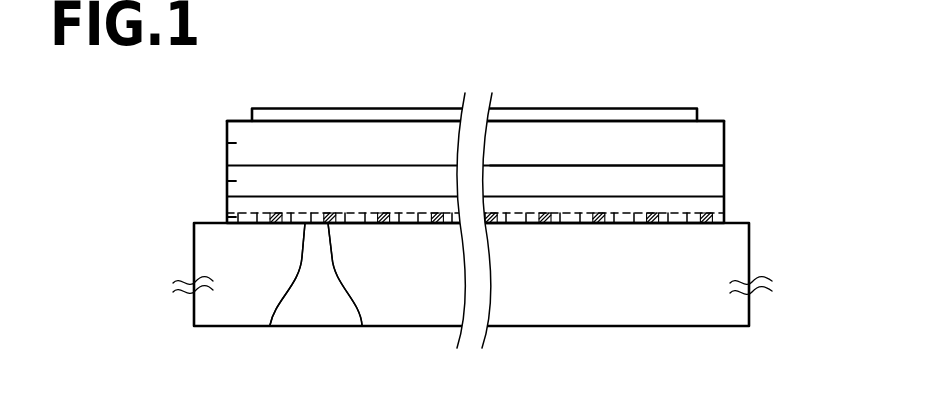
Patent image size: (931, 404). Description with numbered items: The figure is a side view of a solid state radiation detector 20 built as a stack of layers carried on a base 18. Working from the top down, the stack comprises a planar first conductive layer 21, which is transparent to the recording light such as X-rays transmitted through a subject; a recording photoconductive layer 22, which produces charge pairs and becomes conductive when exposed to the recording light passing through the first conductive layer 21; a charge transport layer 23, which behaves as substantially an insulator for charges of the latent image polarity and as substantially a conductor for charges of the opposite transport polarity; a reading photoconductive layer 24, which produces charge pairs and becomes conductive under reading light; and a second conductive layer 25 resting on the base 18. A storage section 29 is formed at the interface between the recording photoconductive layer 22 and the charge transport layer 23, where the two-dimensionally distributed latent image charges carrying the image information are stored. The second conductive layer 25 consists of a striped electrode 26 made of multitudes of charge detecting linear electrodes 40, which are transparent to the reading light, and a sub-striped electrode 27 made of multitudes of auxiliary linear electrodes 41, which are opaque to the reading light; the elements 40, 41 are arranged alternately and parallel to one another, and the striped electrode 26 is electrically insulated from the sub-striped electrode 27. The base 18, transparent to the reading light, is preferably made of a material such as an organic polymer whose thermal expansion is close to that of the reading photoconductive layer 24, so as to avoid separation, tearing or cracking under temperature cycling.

The base 18 is at (203, 317).
The solid state radiation detector 20 is at (634, 87).
The first conductive layer 21 is at (252, 118).
The recording photoconductive layer 22 is at (228, 121).
The charge transport layer 23 is at (227, 143).
The reading photoconductive layer 24 is at (227, 181).
The second conductive layer 25 is at (227, 217).
The striped electrode 26 is at (287, 274).
The sub-striped electrode 27 is at (345, 274).
The storage section 29 is at (724, 166).
The charge detecting linear electrode 40 is at (270, 325).
The auxiliary linear electrode 41 is at (362, 325).